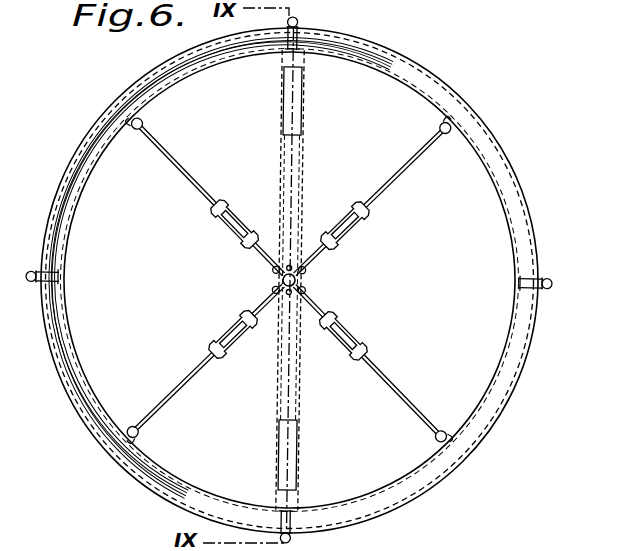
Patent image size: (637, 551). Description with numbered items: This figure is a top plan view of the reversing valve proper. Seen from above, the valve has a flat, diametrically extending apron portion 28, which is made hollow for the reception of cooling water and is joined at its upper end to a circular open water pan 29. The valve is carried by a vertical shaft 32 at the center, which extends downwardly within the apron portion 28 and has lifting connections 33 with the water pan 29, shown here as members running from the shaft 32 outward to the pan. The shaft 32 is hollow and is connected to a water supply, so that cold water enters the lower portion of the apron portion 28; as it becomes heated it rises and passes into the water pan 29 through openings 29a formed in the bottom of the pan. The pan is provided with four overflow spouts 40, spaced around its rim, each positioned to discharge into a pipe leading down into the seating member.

The apron portion 28 is at (293, 403).
The water pan 29 is at (289, 281).
The openings 29a is at (293, 98).
The vertical shaft 32 is at (296, 278).
The lifting connections 33 is at (374, 193).
The overflow spouts 40 is at (304, 11).